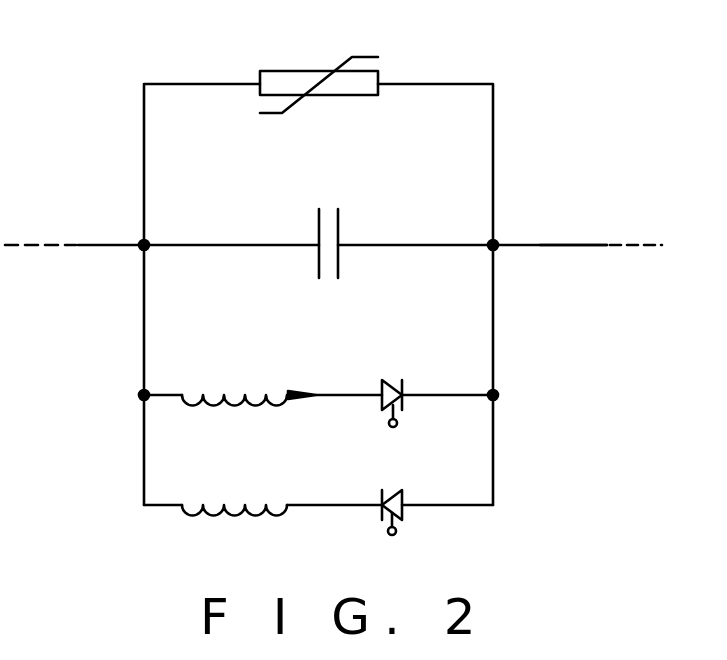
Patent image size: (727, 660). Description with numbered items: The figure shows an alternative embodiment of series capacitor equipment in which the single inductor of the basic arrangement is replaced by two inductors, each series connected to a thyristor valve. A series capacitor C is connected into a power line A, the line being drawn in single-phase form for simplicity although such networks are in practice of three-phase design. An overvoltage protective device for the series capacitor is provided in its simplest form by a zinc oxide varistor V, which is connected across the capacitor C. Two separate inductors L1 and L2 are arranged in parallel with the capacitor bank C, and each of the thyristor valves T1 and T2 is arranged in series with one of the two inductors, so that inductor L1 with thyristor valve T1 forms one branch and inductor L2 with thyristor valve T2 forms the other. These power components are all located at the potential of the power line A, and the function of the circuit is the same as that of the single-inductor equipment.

The zinc oxide varistor V is at (296, 70).
The series capacitor C is at (338, 228).
The power line A is at (575, 245).
The first inductor L1 is at (212, 393).
The first thyristor valve T1 is at (387, 385).
The second inductor L2 is at (224, 512).
The second thyristor valve T2 is at (403, 512).